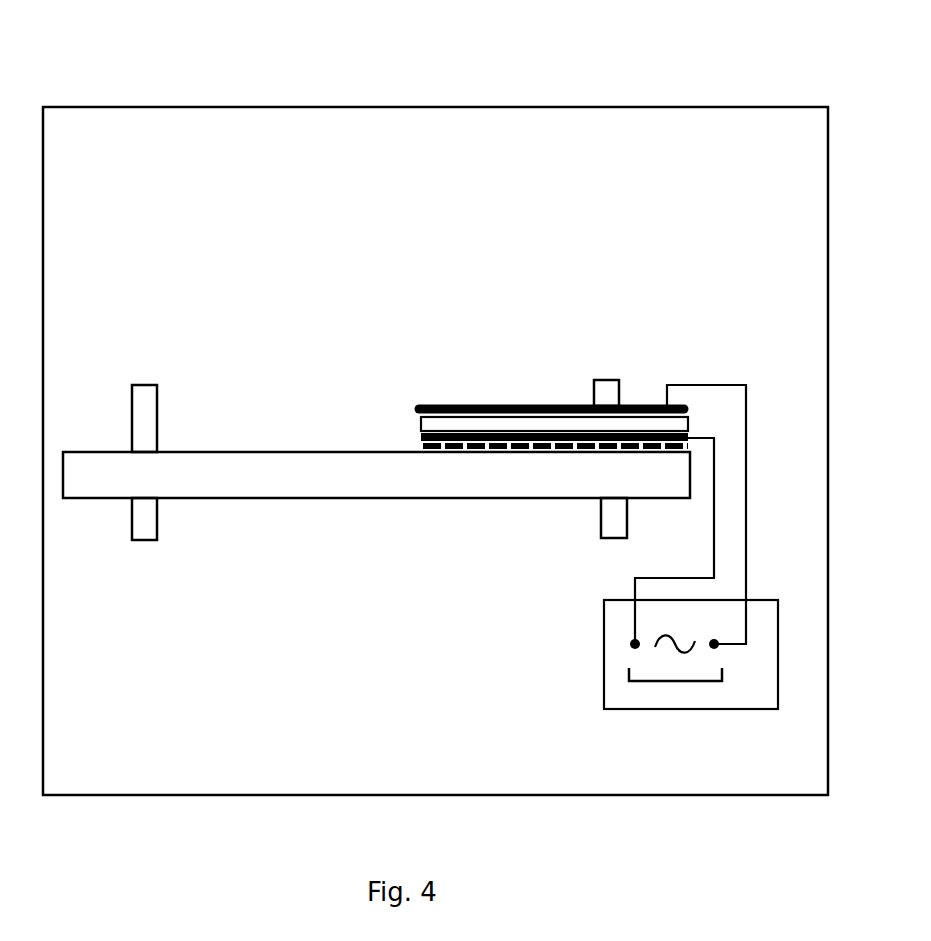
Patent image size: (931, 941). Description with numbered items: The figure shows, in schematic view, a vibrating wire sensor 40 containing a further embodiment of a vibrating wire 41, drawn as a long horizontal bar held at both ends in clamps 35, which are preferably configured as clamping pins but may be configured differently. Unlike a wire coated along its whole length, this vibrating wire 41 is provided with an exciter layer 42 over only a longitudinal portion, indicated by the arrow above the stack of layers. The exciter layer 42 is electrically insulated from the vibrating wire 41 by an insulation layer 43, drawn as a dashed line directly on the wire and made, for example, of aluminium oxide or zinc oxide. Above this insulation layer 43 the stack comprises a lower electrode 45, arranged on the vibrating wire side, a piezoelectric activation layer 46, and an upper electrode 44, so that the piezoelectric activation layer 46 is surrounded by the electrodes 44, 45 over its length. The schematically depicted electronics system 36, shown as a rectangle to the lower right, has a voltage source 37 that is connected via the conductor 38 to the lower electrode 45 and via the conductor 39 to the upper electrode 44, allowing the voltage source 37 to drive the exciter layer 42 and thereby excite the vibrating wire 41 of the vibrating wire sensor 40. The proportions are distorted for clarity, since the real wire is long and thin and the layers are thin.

The clamps 35 is at (612, 391).
The electronics system 36 is at (602, 640).
The voltage source 37 is at (677, 683).
The conductor 38 is at (710, 522).
The conductor 39 is at (716, 385).
The vibrating wire sensor 40 is at (460, 107).
The vibrating wire 41 is at (284, 486).
The exciter layer 42 is at (524, 358).
The insulation layer 43 is at (420, 446).
The upper electrode 44 is at (483, 406).
The lower electrode 45 is at (420, 438).
The piezoelectric activation layer 46 is at (455, 424).